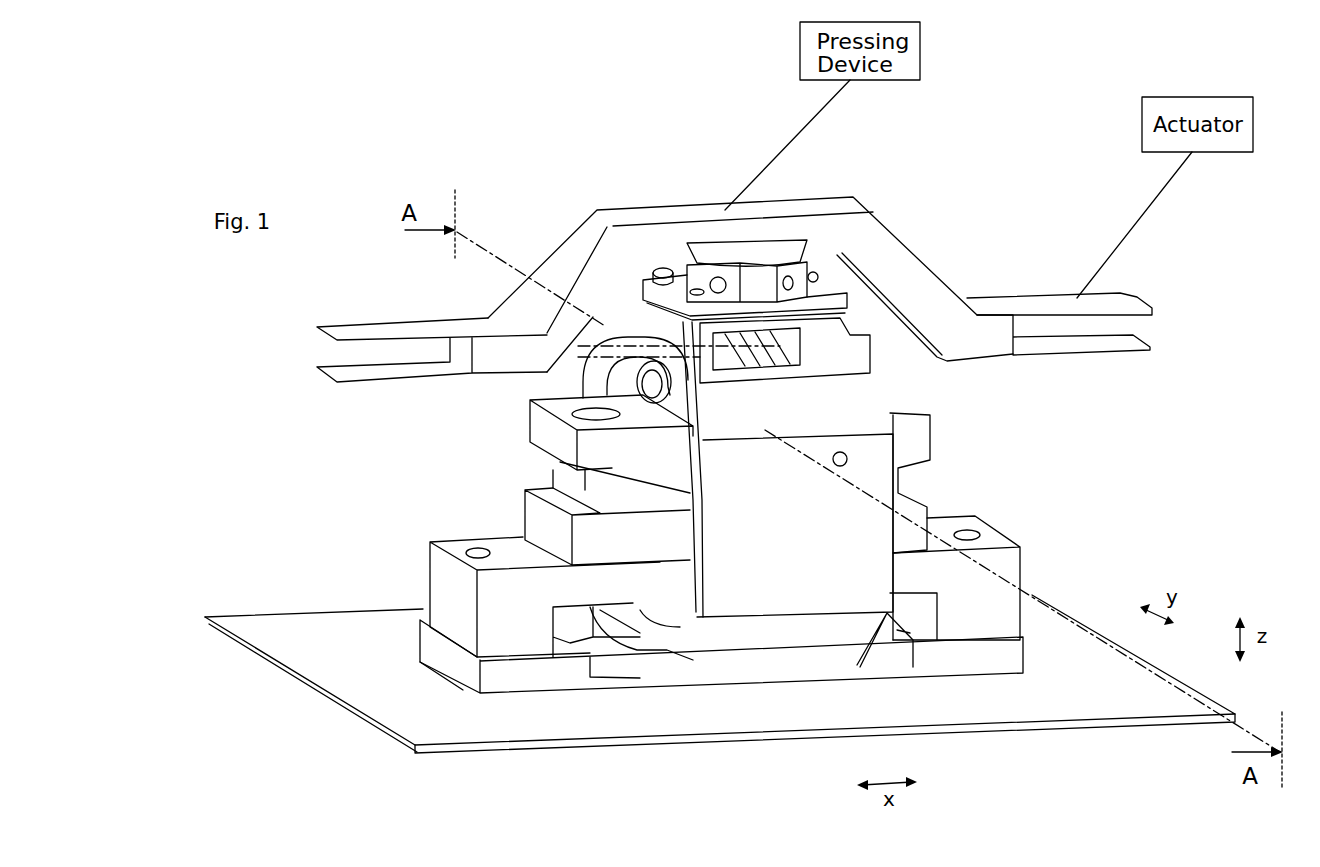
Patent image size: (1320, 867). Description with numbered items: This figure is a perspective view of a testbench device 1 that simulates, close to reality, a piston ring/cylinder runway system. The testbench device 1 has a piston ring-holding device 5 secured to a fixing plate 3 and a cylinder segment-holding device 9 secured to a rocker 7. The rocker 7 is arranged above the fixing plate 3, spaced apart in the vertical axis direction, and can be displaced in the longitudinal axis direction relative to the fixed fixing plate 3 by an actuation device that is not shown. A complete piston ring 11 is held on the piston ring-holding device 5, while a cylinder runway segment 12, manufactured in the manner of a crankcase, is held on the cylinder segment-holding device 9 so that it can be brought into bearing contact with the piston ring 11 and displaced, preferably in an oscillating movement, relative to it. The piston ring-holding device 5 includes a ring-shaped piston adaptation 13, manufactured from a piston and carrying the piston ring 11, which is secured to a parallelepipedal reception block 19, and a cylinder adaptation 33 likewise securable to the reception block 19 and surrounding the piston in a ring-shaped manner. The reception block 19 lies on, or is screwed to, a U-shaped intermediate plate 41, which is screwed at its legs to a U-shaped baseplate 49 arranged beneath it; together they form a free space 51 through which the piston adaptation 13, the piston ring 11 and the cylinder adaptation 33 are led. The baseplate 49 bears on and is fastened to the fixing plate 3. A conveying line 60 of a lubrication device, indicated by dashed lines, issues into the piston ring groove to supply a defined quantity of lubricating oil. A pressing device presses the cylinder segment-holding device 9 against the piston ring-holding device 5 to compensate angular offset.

The testbench device 1 is at (1052, 243).
The fixing plate 3 is at (1105, 687).
The piston ring-holding device 5 is at (1002, 462).
The rocker 7 is at (1134, 301).
The cylinder segment-holding device 9 is at (836, 272).
The piston ring 11 is at (840, 368).
The cylinder runway segment 12 is at (800, 322).
The piston adaptation 13 is at (605, 400).
The reception block 19 is at (523, 498).
The cylinder adaptation 33 is at (890, 588).
The intermediate plate 41 is at (447, 582).
The baseplate 49 is at (520, 680).
The free space 51 is at (605, 656).
The conveying line 60 is at (525, 320).